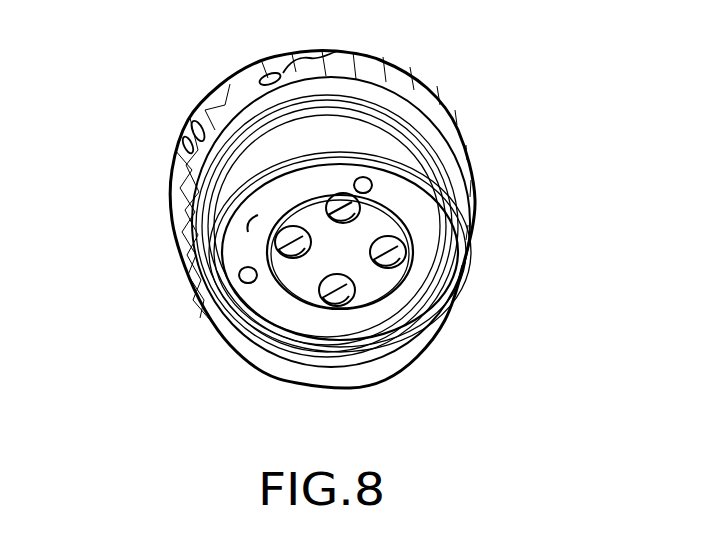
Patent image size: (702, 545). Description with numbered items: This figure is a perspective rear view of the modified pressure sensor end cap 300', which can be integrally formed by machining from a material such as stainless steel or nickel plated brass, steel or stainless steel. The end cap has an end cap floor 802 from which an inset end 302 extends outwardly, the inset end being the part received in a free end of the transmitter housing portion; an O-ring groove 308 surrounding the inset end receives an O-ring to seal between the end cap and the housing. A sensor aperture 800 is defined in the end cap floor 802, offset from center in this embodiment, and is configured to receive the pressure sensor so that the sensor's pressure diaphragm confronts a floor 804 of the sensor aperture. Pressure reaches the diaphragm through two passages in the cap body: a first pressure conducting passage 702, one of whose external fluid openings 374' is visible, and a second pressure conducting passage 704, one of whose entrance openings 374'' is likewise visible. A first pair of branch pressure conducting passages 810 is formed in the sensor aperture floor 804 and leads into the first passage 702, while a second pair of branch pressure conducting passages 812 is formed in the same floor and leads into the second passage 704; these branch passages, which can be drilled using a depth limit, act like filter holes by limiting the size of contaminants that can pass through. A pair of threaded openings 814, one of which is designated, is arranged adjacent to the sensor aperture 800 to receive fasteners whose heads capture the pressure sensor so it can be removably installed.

The modified pressure sensor end cap 300' is at (362, 207).
The inset end 302 is at (243, 356).
The O-ring groove 308 is at (464, 175).
The external fluid opening 374' is at (139, 147).
The entrance opening 374'' is at (316, 36).
The first pressure conducting passage 702 is at (195, 124).
The second pressure conducting passage 704 is at (262, 72).
The sensor aperture 800 is at (309, 316).
The end cap floor 802 is at (248, 232).
The sensor aperture floor 804 is at (373, 288).
The first pair of branch pressure conducting passages 810 is at (321, 300).
The second pair of branch pressure conducting passages 812 is at (406, 254).
The threaded openings 814 is at (372, 190).